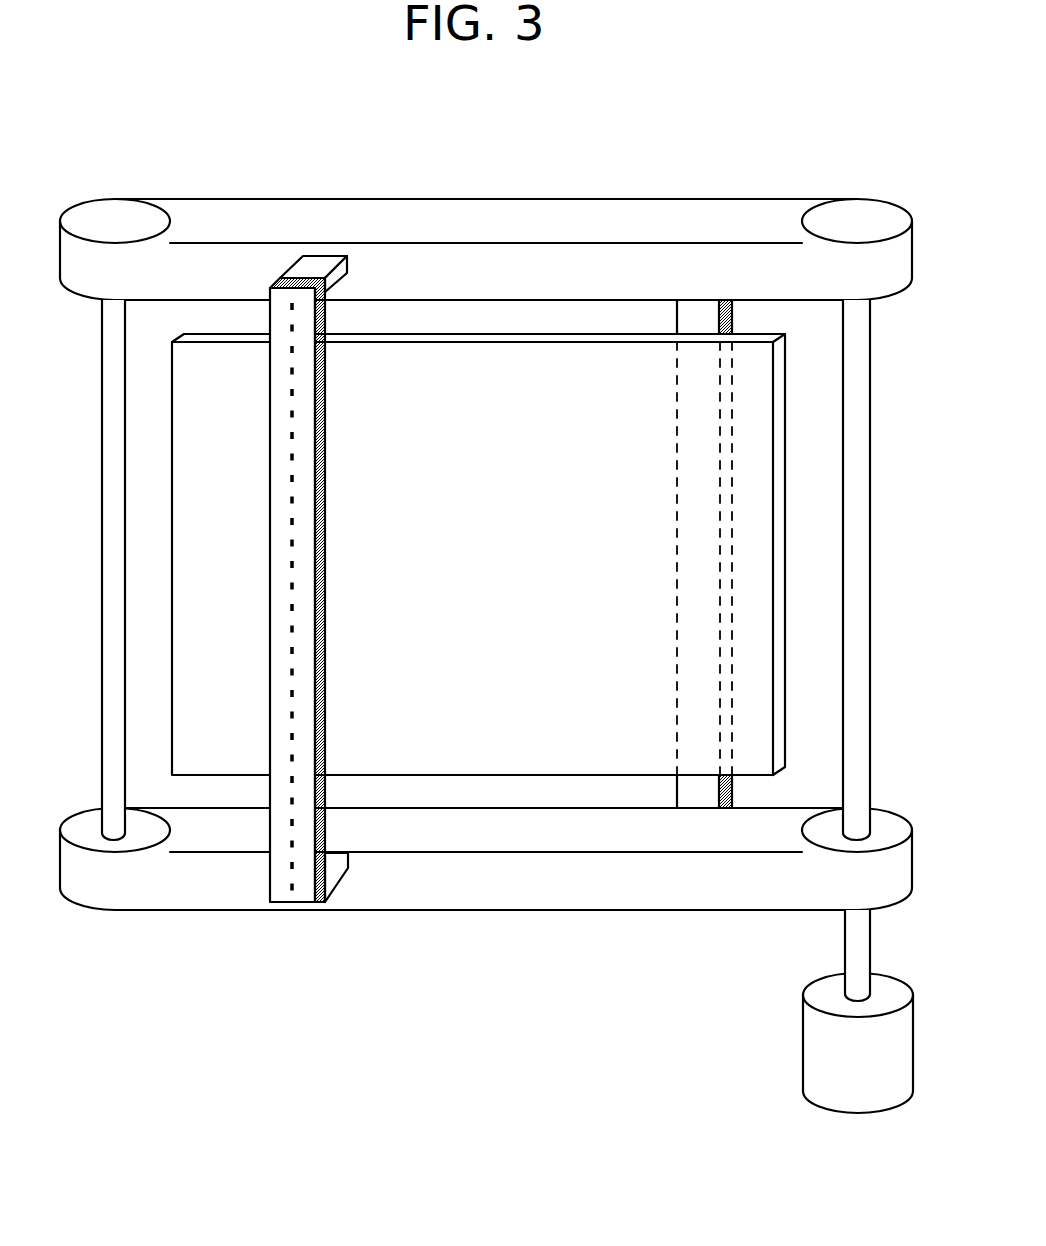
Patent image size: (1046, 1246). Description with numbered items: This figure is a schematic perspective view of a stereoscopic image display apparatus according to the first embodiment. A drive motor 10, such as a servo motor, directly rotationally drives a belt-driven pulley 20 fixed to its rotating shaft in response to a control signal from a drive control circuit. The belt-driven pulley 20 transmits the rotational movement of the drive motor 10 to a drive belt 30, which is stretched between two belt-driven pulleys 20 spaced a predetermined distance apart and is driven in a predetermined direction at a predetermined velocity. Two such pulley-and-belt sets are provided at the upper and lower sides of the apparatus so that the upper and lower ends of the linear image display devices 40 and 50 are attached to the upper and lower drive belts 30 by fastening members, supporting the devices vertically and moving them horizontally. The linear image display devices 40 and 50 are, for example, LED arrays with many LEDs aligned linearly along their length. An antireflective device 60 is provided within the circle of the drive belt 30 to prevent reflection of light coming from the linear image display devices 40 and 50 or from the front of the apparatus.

The drive motor 10 is at (803, 1040).
The belt-driven pulley 20 is at (888, 220).
The drive belt 30 is at (446, 198).
The linear image display device 40 is at (327, 522).
The linear image display device 50 is at (733, 313).
The antireflective device 60 is at (786, 558).